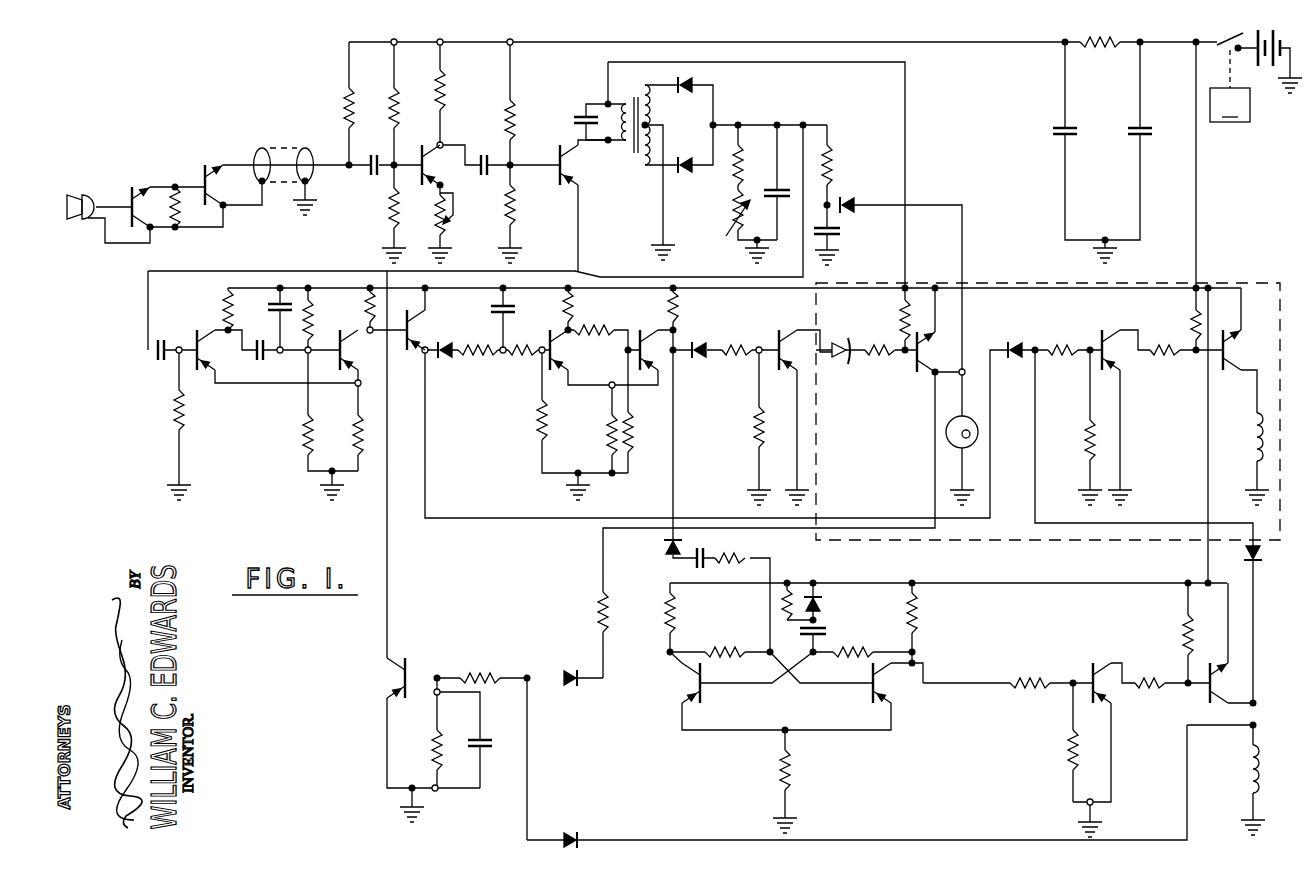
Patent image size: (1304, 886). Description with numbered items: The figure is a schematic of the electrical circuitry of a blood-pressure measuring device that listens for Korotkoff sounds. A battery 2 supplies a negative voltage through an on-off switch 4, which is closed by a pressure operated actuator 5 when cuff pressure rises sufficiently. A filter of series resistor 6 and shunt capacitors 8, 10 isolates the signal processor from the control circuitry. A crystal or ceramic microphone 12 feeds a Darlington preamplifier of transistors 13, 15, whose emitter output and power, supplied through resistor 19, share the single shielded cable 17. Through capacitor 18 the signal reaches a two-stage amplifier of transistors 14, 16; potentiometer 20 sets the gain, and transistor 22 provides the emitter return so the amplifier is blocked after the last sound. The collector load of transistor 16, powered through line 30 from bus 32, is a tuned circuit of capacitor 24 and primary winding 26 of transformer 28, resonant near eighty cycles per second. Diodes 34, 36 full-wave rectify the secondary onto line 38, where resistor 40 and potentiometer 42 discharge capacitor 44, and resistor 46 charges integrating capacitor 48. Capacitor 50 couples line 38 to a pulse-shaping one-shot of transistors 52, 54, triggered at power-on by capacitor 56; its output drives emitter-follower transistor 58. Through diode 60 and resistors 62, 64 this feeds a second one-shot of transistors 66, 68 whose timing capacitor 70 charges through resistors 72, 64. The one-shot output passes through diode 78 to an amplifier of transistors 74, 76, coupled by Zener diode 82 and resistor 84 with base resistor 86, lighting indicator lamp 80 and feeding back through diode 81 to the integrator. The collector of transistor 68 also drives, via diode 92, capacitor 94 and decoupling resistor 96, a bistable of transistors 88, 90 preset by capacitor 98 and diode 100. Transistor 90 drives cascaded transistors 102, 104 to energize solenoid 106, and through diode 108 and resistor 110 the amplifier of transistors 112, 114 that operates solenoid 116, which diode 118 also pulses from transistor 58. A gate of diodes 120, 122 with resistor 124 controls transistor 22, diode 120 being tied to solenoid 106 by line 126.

The battery 2 is at (1265, 58).
The on-off switch 4 is at (1223, 48).
The pressure operated actuator 5 is at (1230, 105).
The series resistor 6 is at (1098, 47).
The shunt capacitor 8 is at (1150, 130).
The shunt capacitor 10 is at (1072, 130).
The microphone 12 is at (90, 204).
The transistor 13 is at (130, 196).
The transistor 14 is at (438, 178).
The transistor 15 is at (204, 198).
The transistor 16 is at (559, 156).
The shielded cable 17 is at (262, 148).
The capacitor 18 is at (372, 177).
The resistor 19 is at (345, 122).
The potentiometer 20 is at (437, 217).
The transistor 22 is at (409, 666).
The capacitor 24 is at (584, 117).
The primary winding 26 is at (640, 142).
The transformer 28 is at (630, 97).
The line 30 is at (905, 137).
The bus 32 is at (1197, 212).
The diode 34 is at (686, 91).
The diode 36 is at (686, 171).
The line 38 is at (148, 308).
The resistor 40 is at (744, 162).
The potentiometer 42 is at (729, 231).
The capacitor 44 is at (782, 204).
The resistor 46 is at (836, 164).
The capacitor 48 is at (842, 232).
The capacitor 50 is at (155, 352).
The transistor 52 is at (207, 346).
The transistor 54 is at (349, 353).
The capacitor 56 is at (273, 309).
The transistor 58 is at (420, 347).
The diode 60 is at (446, 356).
The resistor 62 is at (478, 355).
The resistor 64 is at (523, 357).
The transistor 66 is at (567, 352).
The transistor 68 is at (656, 350).
The capacitor 70 is at (506, 314).
The resistor 72 is at (547, 433).
The transistor 74 is at (777, 341).
The transistor 76 is at (914, 372).
The diode 78 is at (700, 359).
The indicator lamp 80 is at (967, 417).
The diode 81 is at (852, 203).
The Zener diode 82 is at (843, 367).
The resistor 84 is at (879, 357).
The resistor 86 is at (899, 331).
The transistor 88 is at (706, 687).
The transistor 90 is at (874, 688).
The diode 92 is at (666, 544).
The capacitor 94 is at (703, 557).
The resistor 96 is at (746, 553).
The capacitor 98 is at (826, 631).
The diode 100 is at (821, 603).
The transistor 102 is at (1088, 673).
The transistor 104 is at (1208, 696).
The solenoid 106 is at (1244, 768).
The diode 108 is at (1249, 556).
The resistor 110 is at (1067, 348).
The transistor 112 is at (1117, 361).
The transistor 114 is at (1238, 353).
The solenoid 116 is at (1252, 445).
The diode 118 is at (1015, 348).
The diode 120 is at (580, 834).
The diode 122 is at (580, 685).
The resistor 124 is at (482, 673).
The line 126 is at (657, 840).